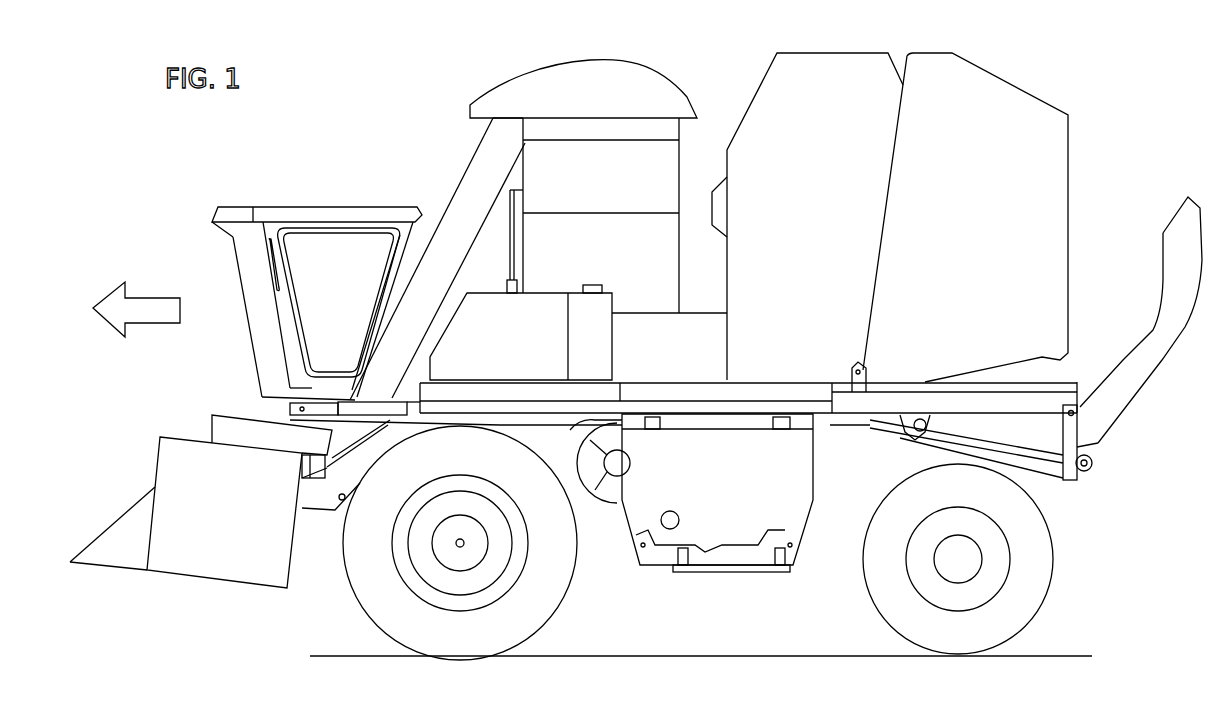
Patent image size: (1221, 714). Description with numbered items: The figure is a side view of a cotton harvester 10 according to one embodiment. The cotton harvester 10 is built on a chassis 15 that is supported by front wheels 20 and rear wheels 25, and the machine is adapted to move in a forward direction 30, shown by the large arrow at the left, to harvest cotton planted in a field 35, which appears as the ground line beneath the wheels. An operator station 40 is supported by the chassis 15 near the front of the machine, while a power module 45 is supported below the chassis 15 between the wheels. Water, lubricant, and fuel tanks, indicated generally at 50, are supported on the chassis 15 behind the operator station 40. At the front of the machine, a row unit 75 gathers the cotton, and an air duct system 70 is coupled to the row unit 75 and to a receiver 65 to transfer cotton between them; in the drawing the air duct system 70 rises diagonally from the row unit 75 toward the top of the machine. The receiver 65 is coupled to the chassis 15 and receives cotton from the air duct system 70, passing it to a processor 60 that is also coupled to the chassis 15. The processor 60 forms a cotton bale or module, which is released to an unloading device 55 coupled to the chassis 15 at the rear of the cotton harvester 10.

The cotton harvester 10 is at (375, 138).
The chassis 15 is at (248, 403).
The front wheels 20 is at (378, 603).
The rear wheels 25 is at (1027, 612).
The forward direction 30 is at (140, 305).
The field 35 is at (212, 699).
The operator station 40 is at (280, 215).
The power module 45 is at (757, 592).
The water, lubricant, and fuel tanks 50 is at (555, 282).
The unloading device 55 is at (1175, 240).
The processor 60 is at (1060, 80).
The receiver 65 is at (696, 145).
The air duct system 70 is at (433, 208).
The row unit 75 is at (170, 563).